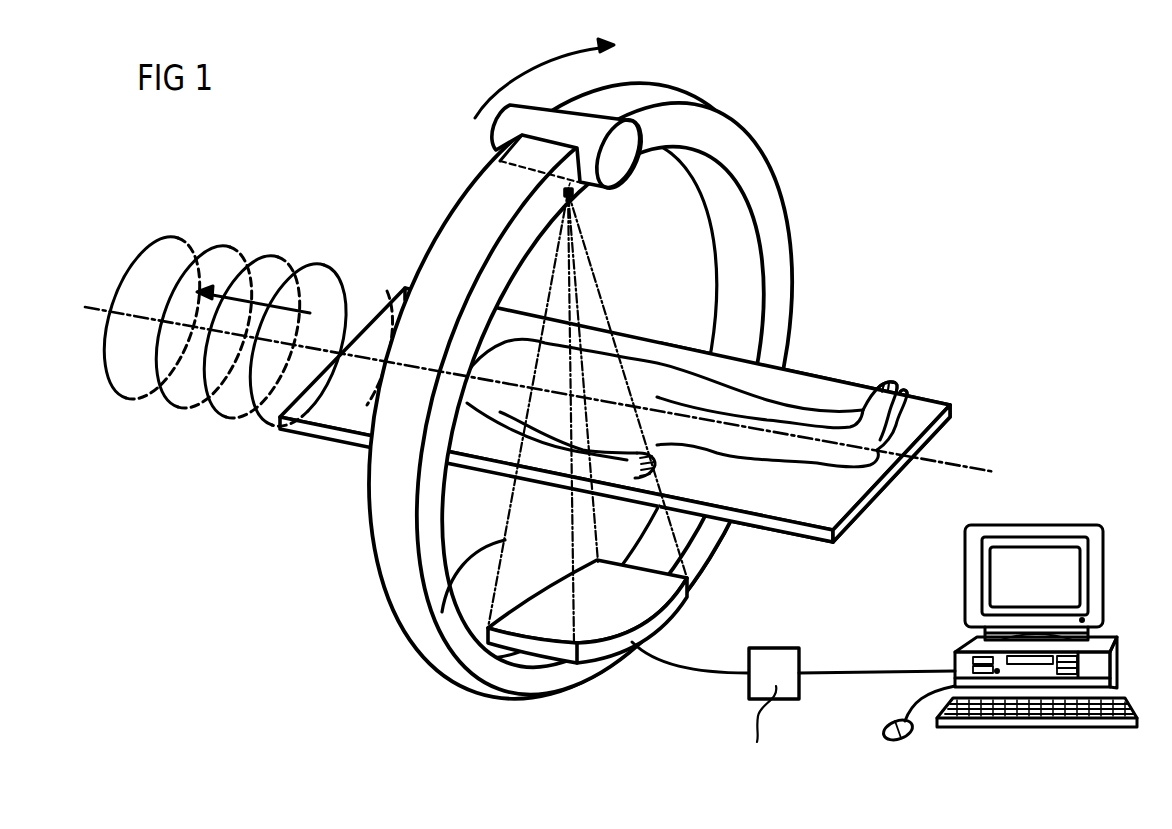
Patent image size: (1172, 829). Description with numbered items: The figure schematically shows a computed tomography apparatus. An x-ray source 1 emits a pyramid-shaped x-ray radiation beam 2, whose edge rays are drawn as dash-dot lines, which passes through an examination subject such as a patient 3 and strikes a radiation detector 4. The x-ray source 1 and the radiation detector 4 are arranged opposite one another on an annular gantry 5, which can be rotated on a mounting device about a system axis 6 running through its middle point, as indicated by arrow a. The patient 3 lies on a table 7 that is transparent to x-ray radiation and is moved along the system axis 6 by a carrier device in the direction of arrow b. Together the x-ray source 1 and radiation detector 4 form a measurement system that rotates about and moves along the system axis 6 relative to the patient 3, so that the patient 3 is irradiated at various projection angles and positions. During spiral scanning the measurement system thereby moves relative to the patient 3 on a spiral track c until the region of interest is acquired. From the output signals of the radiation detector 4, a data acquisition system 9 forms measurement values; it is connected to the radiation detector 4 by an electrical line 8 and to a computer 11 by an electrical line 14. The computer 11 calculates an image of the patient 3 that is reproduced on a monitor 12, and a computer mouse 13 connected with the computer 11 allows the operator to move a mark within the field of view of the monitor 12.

The x-ray source 1 is at (512, 128).
The x-ray radiation beam 2 is at (446, 560).
The patient 3 is at (781, 408).
The radiation detector 4 is at (592, 612).
The gantry 5 is at (776, 226).
The system axis 6 is at (970, 464).
The table 7 is at (771, 497).
The electrical line 8 is at (691, 675).
The data acquisition system 9 is at (760, 647).
The computer 11 is at (1112, 670).
The monitor 12 is at (1074, 525).
The computer mouse 13 is at (907, 743).
The electrical line 14 is at (833, 674).
The arrow a is at (513, 80).
The arrow b is at (292, 257).
The spiral track c is at (237, 243).